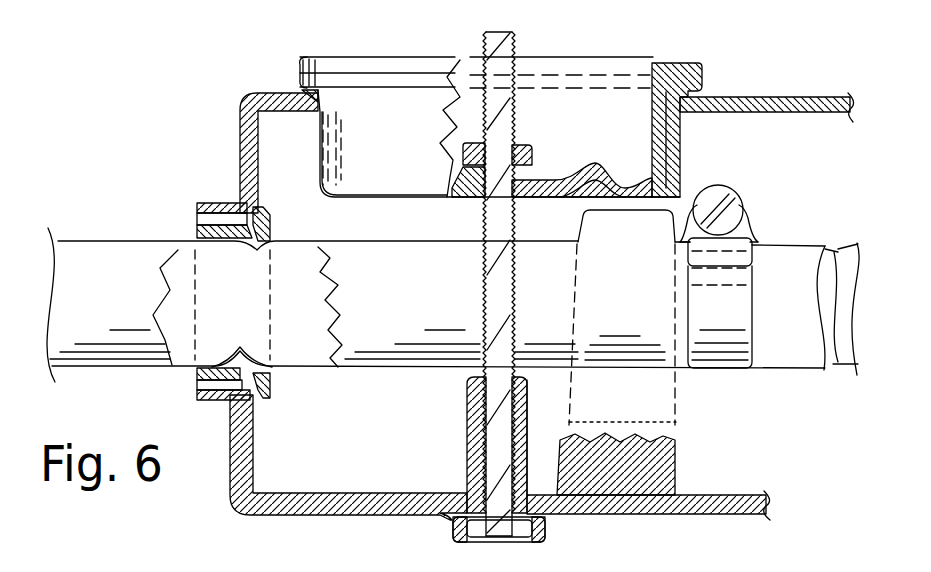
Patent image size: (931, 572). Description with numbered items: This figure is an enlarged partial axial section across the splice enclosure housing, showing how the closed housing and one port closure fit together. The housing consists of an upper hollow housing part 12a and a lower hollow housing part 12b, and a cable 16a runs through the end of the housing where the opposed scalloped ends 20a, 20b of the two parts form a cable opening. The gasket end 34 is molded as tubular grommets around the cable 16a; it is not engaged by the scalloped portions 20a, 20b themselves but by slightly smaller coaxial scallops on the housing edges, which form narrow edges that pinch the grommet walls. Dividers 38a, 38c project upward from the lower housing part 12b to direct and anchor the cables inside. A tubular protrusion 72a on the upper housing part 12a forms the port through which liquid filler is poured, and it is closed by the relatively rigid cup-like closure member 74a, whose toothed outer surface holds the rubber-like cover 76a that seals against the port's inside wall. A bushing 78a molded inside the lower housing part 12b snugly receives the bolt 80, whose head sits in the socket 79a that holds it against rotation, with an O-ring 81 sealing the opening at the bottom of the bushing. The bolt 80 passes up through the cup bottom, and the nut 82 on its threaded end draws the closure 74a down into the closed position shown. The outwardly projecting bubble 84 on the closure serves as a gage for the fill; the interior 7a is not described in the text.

The cup / receptacle 7a is at (340, 141).
The upper hollow housing part 12a is at (753, 100).
The lower hollow housing part 12b is at (722, 515).
The cable 16a is at (365, 342).
The scalloped end 20a is at (203, 208).
The scalloped end 20b is at (203, 400).
The gasket end 34 is at (197, 231).
The divider 38a is at (665, 474).
The divider 38c is at (675, 398).
The tubular protrusion 72a is at (314, 98).
The cup-like closure member 74a is at (314, 95).
The rubber-like cover 76a is at (681, 161).
The bushing 78a is at (470, 450).
The socket 79a is at (458, 527).
The bolt 80 is at (486, 300).
The O-ring 81 is at (546, 520).
The nut 82 is at (531, 165).
The outwardly projecting bubble 84 is at (605, 182).